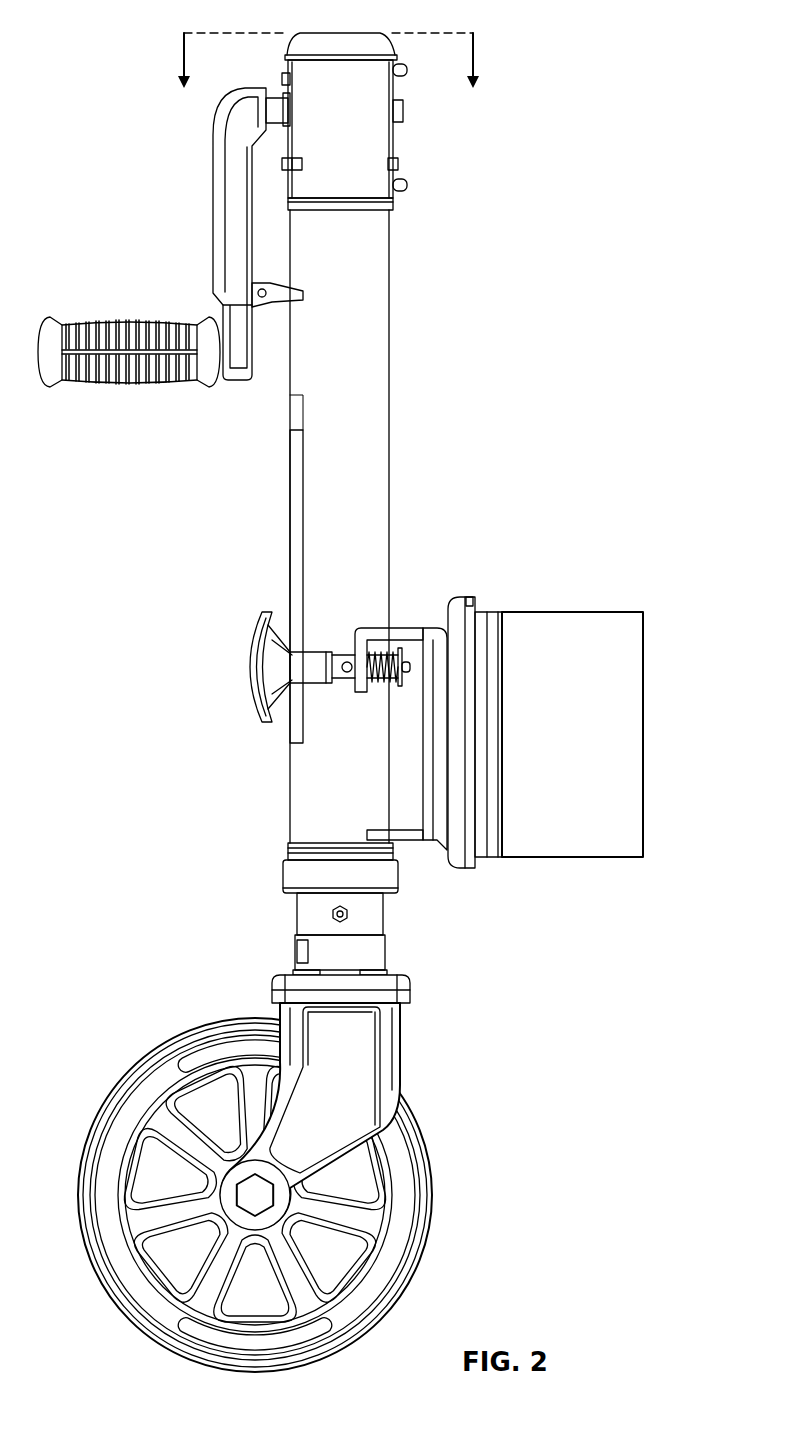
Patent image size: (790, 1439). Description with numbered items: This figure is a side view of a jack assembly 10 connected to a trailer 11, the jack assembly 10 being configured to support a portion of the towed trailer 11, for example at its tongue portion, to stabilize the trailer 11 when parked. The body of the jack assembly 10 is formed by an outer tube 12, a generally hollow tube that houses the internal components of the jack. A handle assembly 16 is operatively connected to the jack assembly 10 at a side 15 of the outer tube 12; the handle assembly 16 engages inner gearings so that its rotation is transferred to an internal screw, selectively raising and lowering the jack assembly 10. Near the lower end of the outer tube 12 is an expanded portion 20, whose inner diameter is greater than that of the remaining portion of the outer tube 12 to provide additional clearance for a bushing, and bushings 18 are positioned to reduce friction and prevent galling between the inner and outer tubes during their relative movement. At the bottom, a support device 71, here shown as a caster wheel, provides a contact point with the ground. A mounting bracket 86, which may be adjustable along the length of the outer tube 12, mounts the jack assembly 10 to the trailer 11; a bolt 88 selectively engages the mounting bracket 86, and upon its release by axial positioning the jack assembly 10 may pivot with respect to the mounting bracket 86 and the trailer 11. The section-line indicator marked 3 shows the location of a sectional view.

The jack assembly 10 is at (142, 36).
The section line for FIG. 3 is at (328, 78).
The trailer 11 is at (627, 727).
The outer tube 12 is at (373, 350).
The side 15 is at (288, 395).
The handle assembly 16 is at (190, 207).
The bushings 18 is at (262, 883).
The expanded portion 20 is at (387, 877).
The support device 71 is at (420, 1044).
The mounting bracket 86 is at (470, 600).
The bolt 88 is at (247, 662).